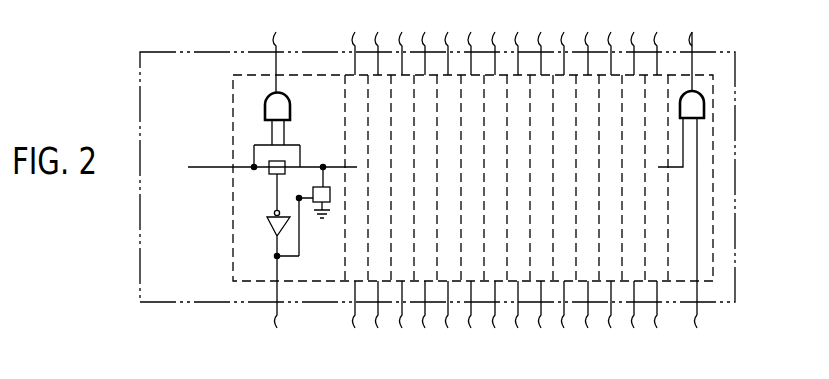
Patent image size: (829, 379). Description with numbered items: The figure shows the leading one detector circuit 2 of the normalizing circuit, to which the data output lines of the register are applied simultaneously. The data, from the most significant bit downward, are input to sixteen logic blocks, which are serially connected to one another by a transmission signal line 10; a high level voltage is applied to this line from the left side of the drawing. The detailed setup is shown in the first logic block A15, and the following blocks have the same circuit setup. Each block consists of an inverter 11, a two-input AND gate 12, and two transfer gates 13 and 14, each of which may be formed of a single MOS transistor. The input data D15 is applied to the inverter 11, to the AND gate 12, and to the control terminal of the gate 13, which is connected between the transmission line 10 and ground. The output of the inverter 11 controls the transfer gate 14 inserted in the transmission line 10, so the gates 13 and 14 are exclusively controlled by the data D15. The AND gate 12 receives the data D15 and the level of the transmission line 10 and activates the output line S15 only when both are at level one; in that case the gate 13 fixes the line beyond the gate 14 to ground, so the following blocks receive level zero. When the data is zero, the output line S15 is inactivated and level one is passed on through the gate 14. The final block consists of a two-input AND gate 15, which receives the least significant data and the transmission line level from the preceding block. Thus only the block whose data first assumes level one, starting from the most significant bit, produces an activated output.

The leading "1" detector circuit 2 is at (738, 89).
The transmission signal line 10 is at (208, 166).
The inverter 11 is at (266, 230).
The two-input AND gate 12 is at (290, 117).
The transfer gate 13 is at (316, 203).
The transfer gate 14 is at (272, 175).
The two-input AND gate 15 is at (704, 117).
The logic block A15 is at (230, 266).
The output line S15 is at (275, 49).
The input data D15 is at (278, 304).